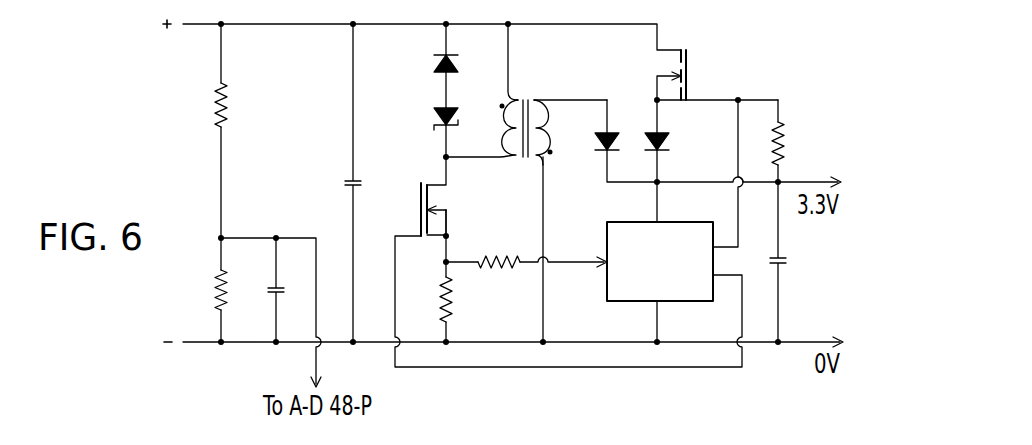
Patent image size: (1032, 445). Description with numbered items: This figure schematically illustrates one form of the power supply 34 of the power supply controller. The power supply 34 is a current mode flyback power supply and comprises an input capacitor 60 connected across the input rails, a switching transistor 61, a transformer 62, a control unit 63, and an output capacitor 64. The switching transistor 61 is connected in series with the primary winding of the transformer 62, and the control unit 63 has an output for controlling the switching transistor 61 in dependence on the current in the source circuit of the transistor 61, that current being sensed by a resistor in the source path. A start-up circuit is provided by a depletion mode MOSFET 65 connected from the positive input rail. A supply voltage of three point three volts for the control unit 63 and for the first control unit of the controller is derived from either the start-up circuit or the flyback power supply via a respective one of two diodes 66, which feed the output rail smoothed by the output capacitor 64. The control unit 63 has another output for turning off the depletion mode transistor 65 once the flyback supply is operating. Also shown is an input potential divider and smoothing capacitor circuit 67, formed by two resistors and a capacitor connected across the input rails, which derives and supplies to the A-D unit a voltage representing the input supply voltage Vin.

The power supply 34 is at (512, 209).
The input capacitor 60 is at (347, 182).
The switching transistor 61 is at (418, 186).
The transformer 62 is at (531, 98).
The control unit 63 is at (611, 290).
The output capacitor 64 is at (790, 266).
The depletion mode MOSFET 65 is at (692, 62).
The diodes 66 is at (650, 131).
The input potential divider and smoothing capacitor circuit 67 is at (261, 210).